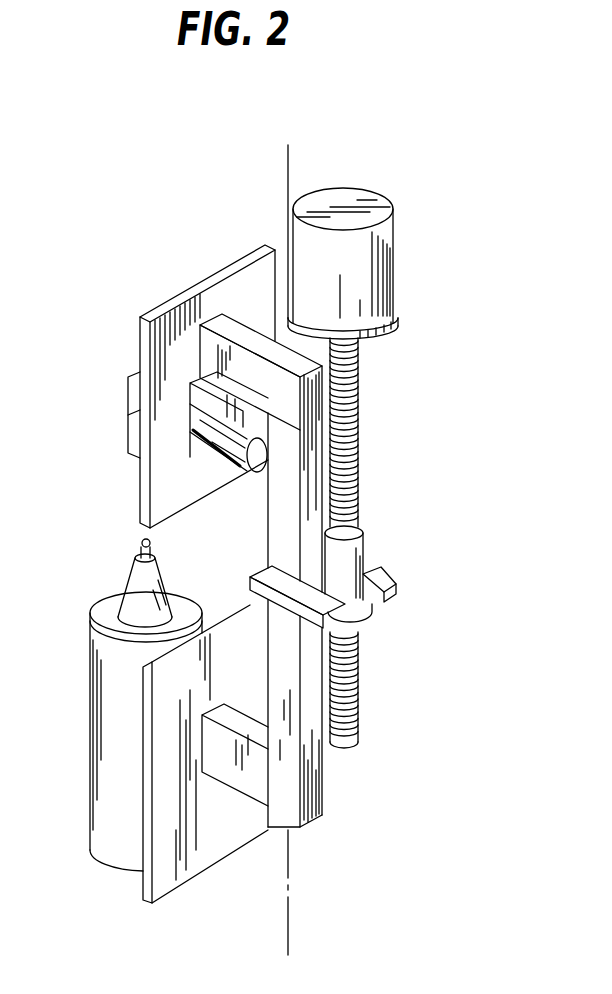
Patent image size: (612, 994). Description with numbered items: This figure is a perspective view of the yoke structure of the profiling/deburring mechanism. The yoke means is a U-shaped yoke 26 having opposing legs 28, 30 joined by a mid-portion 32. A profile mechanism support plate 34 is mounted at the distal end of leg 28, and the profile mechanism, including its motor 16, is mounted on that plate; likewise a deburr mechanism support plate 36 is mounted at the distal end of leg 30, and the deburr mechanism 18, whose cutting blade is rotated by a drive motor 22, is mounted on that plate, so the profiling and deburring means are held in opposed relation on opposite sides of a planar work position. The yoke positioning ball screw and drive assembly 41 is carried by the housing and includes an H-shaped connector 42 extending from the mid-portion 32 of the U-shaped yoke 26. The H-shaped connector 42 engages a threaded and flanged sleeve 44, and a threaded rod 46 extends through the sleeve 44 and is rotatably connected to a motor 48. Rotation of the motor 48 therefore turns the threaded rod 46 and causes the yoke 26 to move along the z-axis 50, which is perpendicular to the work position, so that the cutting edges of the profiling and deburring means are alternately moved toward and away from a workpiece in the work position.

The motor 16 is at (124, 560).
The deburr mechanism 18 is at (128, 402).
The drive motor 22 is at (213, 452).
The U-shaped yoke 26 is at (258, 555).
The leg 28 is at (244, 766).
The leg 30 is at (252, 330).
The mid-portion 32 is at (268, 512).
The profile mechanism support plate 34 is at (165, 872).
The deburr mechanism support plate 36 is at (156, 306).
The yoke positioning ball screw and drive assembly 41 is at (390, 188).
The H-shaped connector 42 is at (392, 580).
The threaded and flanged sleeve 44 is at (364, 561).
The threaded rod 46 is at (355, 408).
The motor 48 is at (398, 302).
The z-axis 50 is at (288, 149).